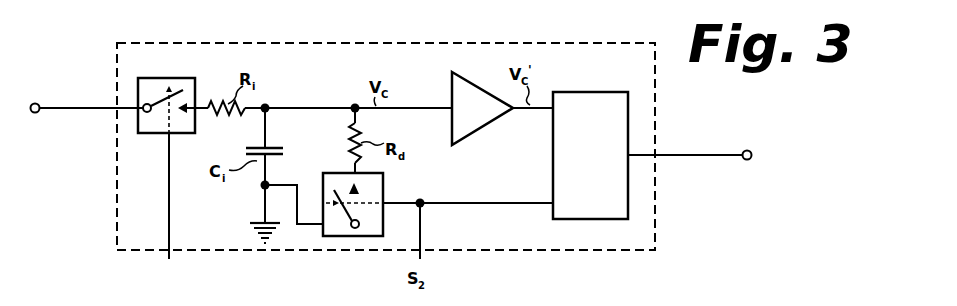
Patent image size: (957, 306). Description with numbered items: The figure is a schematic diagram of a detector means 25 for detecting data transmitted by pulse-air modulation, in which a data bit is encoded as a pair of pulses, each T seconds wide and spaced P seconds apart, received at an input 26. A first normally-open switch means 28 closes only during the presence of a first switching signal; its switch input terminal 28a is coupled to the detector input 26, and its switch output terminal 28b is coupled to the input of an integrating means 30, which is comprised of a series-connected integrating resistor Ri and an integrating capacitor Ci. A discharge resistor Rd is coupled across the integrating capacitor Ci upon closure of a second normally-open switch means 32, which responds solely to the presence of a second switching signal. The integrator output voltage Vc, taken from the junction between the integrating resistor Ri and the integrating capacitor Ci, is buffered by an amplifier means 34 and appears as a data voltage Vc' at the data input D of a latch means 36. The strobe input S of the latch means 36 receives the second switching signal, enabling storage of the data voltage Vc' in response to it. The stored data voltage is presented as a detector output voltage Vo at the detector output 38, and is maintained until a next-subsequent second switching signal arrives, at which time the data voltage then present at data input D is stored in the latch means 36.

The detector means 25 is at (425, 43).
The input 26 is at (37, 103).
The first normally-open switch means 28 is at (166, 79).
The switch input terminal 28a is at (133, 134).
The switch output terminal 28b is at (200, 105).
The integrating means 30 is at (272, 97).
The second normally-open switch means 32 is at (384, 176).
The amplifier means 34 is at (478, 132).
The latch means 36 is at (594, 92).
The detector output 38 is at (717, 153).